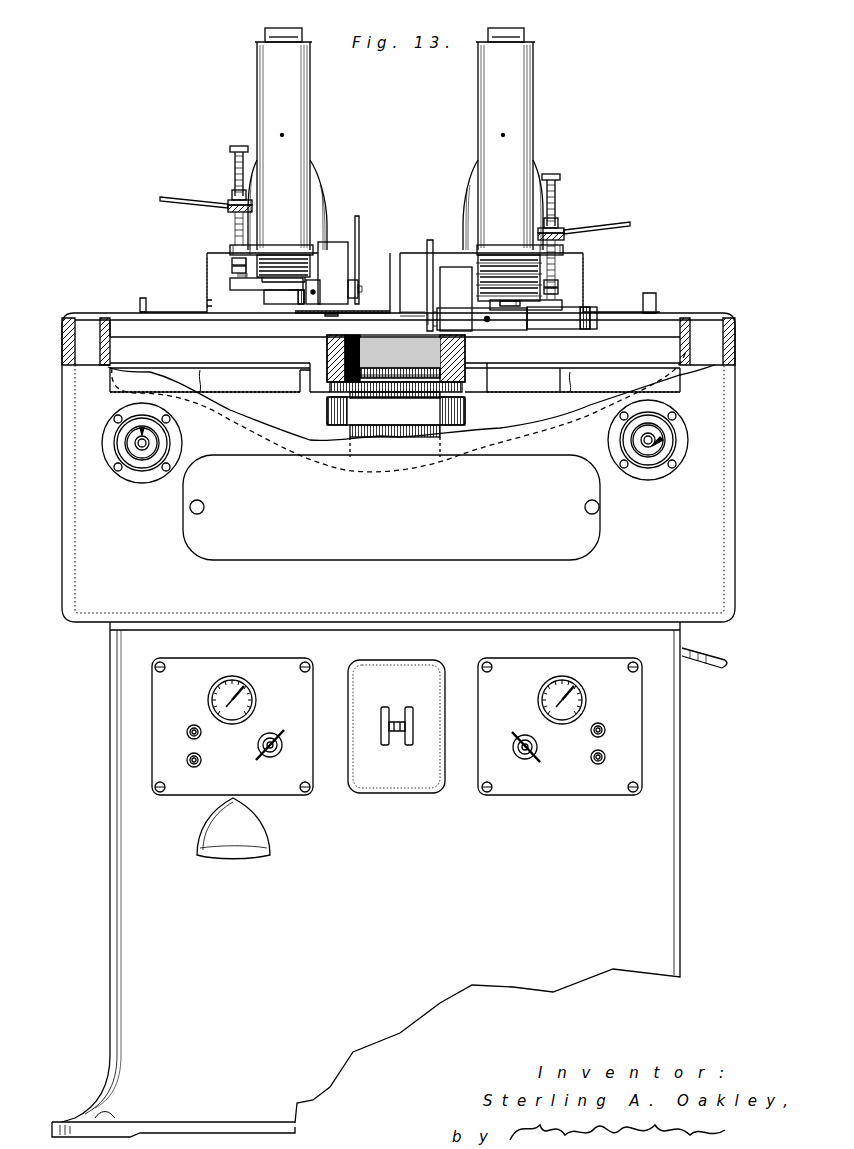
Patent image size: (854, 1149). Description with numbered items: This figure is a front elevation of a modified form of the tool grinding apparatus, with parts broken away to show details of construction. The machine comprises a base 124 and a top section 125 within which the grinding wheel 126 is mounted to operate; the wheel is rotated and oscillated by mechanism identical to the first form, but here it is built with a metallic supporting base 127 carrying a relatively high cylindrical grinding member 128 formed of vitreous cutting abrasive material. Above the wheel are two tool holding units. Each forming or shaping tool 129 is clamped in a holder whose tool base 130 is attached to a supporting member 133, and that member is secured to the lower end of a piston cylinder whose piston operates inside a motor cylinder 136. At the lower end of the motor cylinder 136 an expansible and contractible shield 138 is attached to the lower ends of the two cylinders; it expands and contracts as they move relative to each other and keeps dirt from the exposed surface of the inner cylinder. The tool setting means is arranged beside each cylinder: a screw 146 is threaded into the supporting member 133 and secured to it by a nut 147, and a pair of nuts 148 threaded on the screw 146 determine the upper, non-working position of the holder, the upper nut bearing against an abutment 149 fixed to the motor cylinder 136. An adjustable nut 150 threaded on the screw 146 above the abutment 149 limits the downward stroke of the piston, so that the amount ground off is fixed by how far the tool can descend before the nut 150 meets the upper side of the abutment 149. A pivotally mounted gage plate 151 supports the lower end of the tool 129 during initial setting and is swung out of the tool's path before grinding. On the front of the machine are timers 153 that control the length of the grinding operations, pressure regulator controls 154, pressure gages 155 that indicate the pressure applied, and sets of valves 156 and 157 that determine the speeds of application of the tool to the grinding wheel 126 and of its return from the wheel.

The base 124 is at (672, 870).
The top section 125 is at (720, 575).
The grinding wheel 126 is at (466, 352).
The metallic supporting base 127 is at (465, 385).
The cylindrical grinding member 128 is at (326, 351).
The forming or shaping tool 129 is at (333, 244).
The tool base 130 is at (313, 283).
The supporting member 133 is at (276, 304).
The motor cylinder 136 is at (312, 102).
The expansible and contractible shield 138 is at (275, 262).
The screw 146 is at (236, 229).
The nut 147 is at (232, 281).
The pair of nuts 148 is at (232, 268).
The abutment 149 is at (230, 249).
The adjustable nut 150 is at (226, 210).
The gage plate 151 is at (300, 317).
The timer 153 is at (149, 447).
The pressure regulator control 154 is at (270, 752).
The pressure gage 155 is at (257, 692).
The valve 156 is at (187, 732).
The valve 157 is at (187, 760).